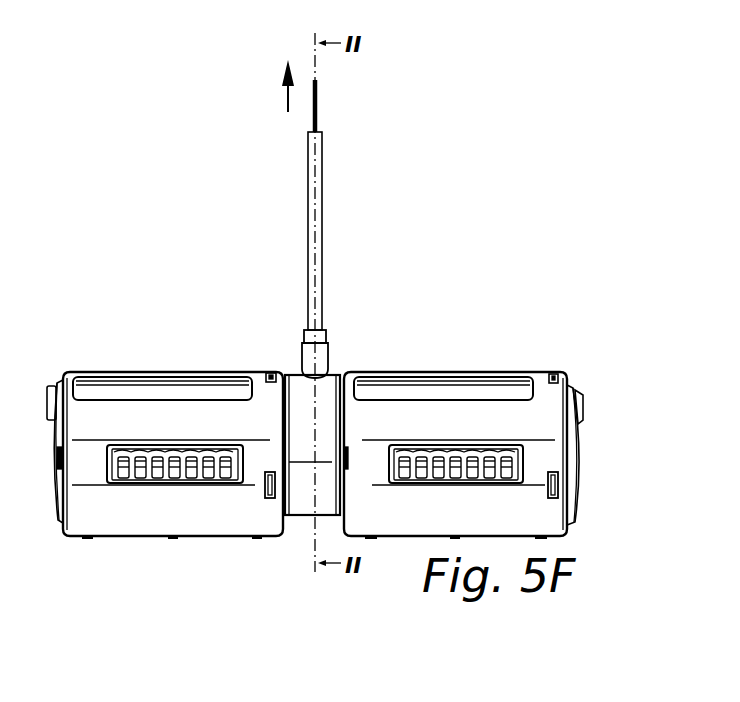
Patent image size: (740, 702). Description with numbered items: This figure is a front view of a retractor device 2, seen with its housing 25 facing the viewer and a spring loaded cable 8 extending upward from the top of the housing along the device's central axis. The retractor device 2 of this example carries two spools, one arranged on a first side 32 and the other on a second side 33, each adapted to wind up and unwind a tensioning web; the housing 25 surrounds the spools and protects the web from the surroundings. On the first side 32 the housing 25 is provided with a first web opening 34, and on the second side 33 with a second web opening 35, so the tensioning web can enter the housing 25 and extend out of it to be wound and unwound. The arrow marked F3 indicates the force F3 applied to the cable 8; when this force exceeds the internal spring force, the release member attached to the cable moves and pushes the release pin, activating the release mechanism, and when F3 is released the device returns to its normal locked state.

The retractor device 2 is at (204, 249).
The cable 8 is at (318, 112).
The housing 25 is at (363, 422).
The first side 32 is at (83, 418).
The second side 33 is at (545, 405).
The first web opening 34 is at (176, 392).
The second web opening 35 is at (468, 392).
The force F3 is at (286, 97).